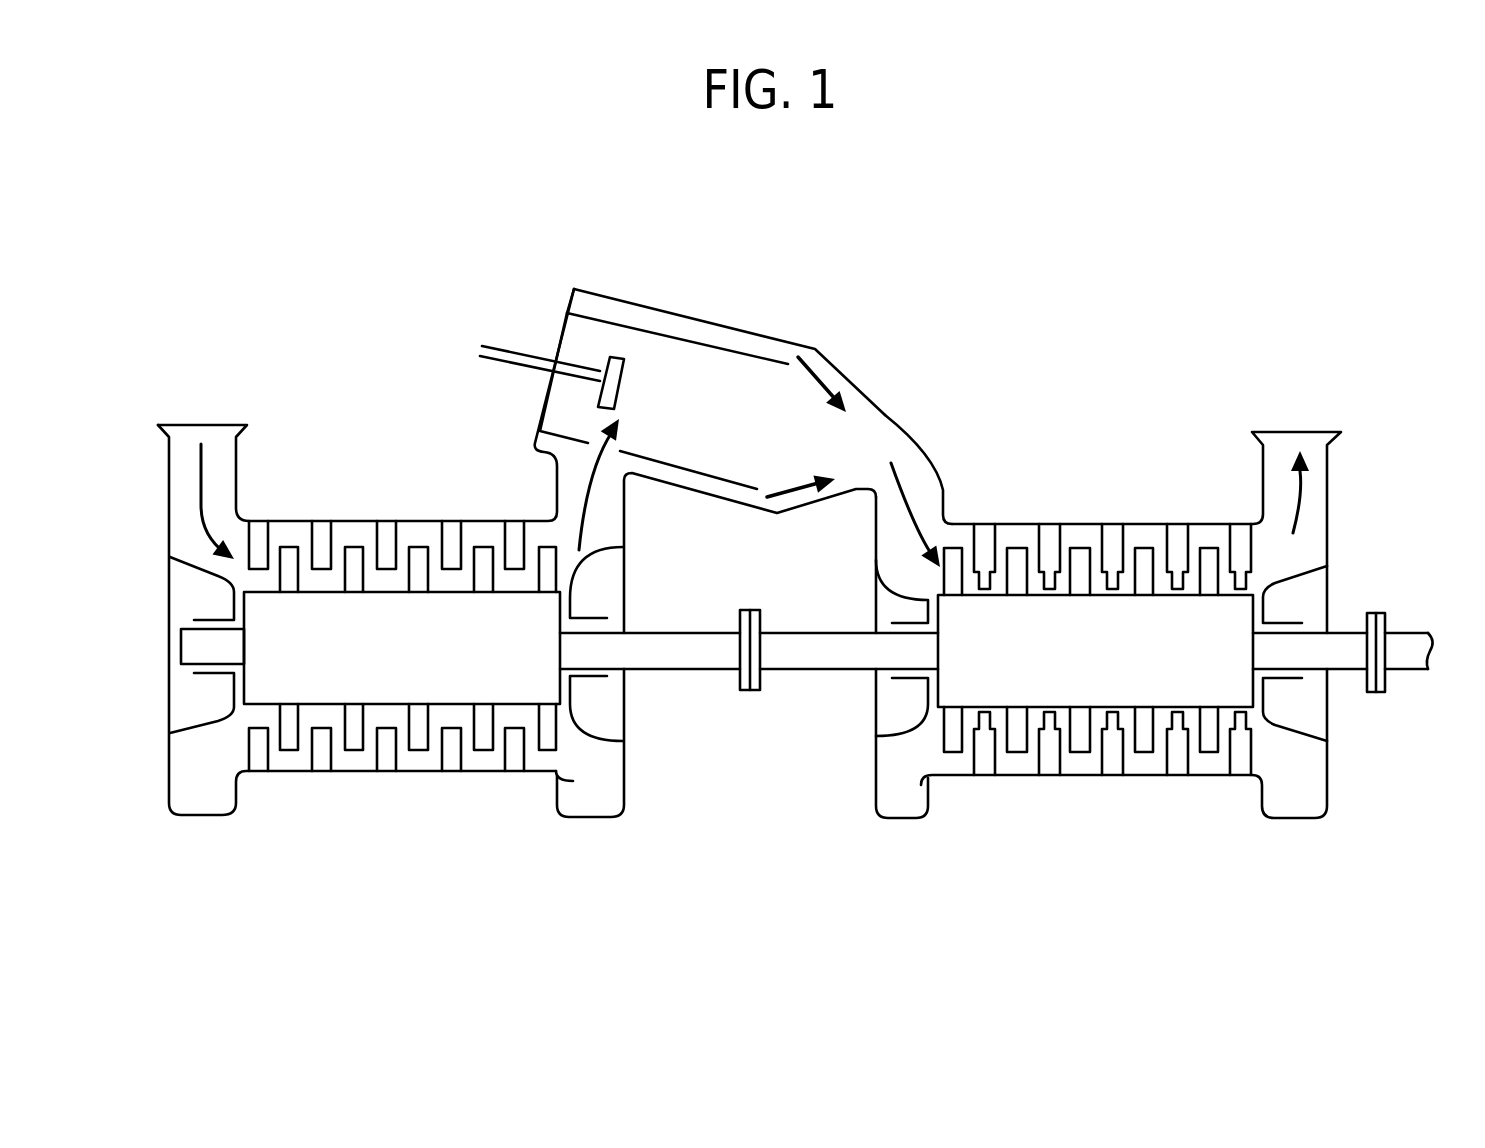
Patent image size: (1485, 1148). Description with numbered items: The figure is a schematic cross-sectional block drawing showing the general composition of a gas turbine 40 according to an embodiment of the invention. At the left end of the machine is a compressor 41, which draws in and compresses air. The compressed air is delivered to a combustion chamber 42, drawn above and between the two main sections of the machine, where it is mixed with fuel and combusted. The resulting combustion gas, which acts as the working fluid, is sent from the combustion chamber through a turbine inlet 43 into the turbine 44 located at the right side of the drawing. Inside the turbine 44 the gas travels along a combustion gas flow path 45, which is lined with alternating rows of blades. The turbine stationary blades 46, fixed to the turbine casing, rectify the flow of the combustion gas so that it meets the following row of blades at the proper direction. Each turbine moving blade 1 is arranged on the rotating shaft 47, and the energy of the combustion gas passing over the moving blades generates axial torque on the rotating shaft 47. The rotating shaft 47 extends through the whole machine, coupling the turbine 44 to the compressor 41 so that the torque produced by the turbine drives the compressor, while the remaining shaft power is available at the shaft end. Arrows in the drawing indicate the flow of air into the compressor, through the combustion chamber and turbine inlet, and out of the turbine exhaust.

The gas turbine 40 is at (1088, 285).
The compressor 41 is at (635, 847).
The combustion chamber 42 is at (929, 260).
The turbine inlet 43 is at (932, 501).
The turbine 44 is at (1343, 852).
The combustion gas flow path 45 is at (1087, 767).
The turbine stationary blades 46 is at (1111, 538).
The turbine moving blade 1 is at (1145, 557).
The rotating shaft 47 is at (825, 670).